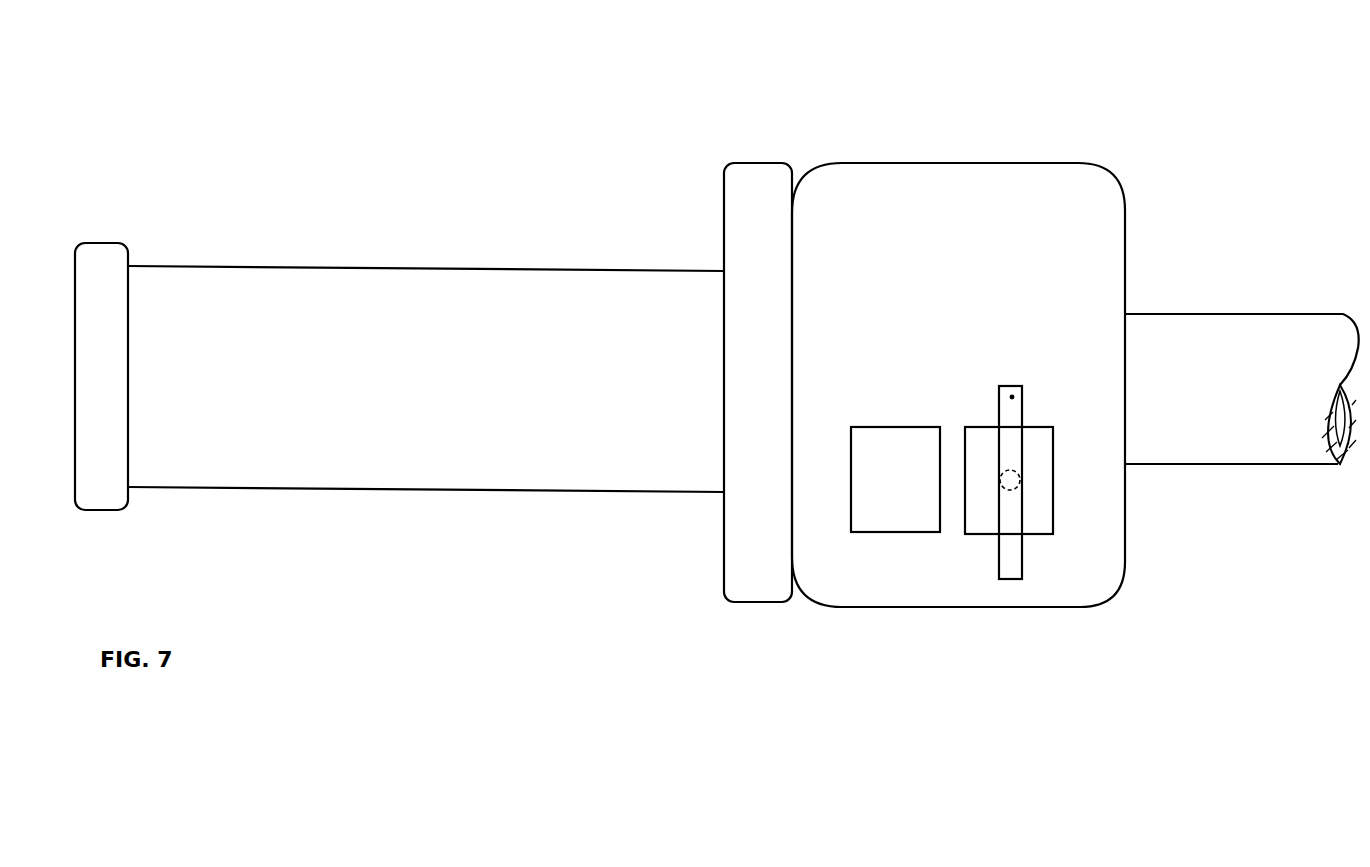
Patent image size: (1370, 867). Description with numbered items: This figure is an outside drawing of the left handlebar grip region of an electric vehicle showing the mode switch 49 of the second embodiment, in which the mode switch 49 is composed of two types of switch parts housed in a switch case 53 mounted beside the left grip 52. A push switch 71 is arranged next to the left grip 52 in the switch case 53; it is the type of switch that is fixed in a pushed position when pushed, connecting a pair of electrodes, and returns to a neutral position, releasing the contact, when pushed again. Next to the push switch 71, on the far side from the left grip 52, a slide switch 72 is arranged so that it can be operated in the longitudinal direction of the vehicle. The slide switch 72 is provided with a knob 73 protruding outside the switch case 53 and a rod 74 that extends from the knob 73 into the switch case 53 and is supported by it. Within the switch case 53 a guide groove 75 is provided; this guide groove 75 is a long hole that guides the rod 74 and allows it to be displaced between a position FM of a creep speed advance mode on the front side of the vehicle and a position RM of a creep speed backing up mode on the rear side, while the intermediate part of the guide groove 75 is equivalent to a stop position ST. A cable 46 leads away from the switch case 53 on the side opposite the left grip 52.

The cable 46 is at (1200, 330).
The mode switch 49 is at (1097, 158).
The left grip 52 is at (547, 283).
The switch case 53 is at (915, 178).
The push switch 71 is at (892, 427).
The slide switch 72 is at (972, 536).
The knob 73 is at (1035, 427).
The rod 74 is at (1003, 492).
The guide groove 75 is at (1000, 416).
The position of creep speed advance mode FM is at (1012, 397).
The position of creep speed backing up mode RM is at (1010, 568).
The stop position ST is at (1015, 476).